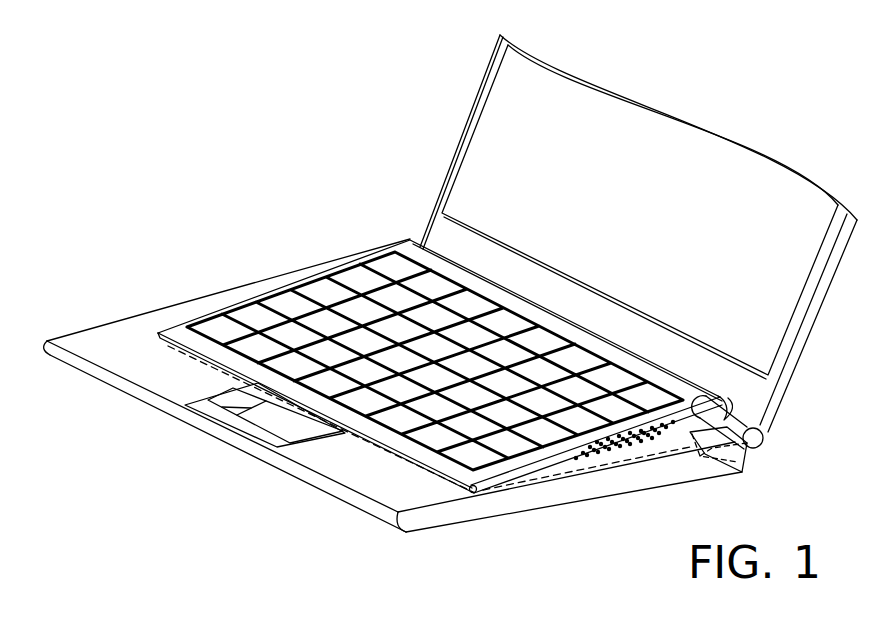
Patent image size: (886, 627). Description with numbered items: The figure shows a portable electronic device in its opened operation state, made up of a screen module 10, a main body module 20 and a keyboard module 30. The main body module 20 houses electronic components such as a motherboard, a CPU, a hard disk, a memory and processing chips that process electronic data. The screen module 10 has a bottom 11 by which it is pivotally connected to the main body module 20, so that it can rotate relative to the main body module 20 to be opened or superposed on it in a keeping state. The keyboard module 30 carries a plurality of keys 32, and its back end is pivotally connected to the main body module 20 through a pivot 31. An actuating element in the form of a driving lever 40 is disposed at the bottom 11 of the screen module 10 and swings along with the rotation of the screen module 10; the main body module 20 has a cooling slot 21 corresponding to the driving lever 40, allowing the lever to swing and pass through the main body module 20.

The screen module 10 is at (682, 117).
The bottom 11 is at (763, 441).
The main body module 20 is at (83, 337).
The cooling slot 21 is at (738, 476).
The keyboard module 30 is at (440, 360).
The pivot 31 is at (480, 497).
The keys 32 is at (253, 310).
The driving lever 40 is at (722, 398).